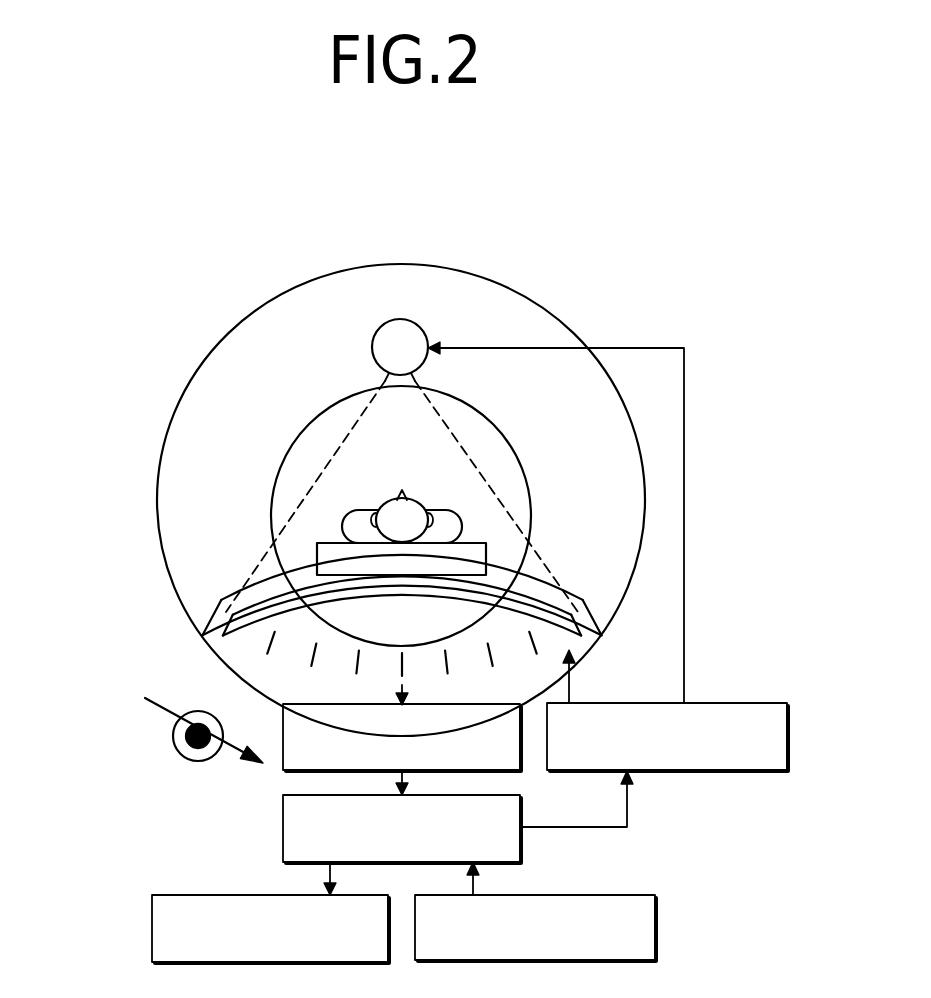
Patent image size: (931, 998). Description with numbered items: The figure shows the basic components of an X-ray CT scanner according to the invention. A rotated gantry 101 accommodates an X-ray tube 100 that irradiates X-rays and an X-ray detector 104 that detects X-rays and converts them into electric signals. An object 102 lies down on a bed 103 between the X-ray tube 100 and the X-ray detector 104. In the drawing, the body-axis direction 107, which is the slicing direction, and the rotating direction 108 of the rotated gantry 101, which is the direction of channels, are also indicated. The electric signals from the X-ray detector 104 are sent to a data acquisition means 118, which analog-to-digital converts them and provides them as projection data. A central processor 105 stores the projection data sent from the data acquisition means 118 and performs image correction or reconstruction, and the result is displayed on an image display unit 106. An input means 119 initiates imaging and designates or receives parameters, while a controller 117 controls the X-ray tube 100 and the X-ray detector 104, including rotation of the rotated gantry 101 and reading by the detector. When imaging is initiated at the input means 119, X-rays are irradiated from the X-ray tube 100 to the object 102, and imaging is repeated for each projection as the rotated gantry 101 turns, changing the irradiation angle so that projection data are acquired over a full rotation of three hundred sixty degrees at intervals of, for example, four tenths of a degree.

The X-ray tube 100 is at (422, 329).
The rotated gantry 101 is at (257, 337).
The object 102 is at (397, 503).
The bed 103 is at (327, 562).
The X-ray detector 104 is at (213, 638).
The central processor 105 is at (503, 843).
The image display unit 106 is at (160, 922).
The body-axis direction 107 is at (190, 753).
The rotating direction 108 is at (163, 710).
The controller 117 is at (748, 713).
The data acquisition means 118 is at (507, 762).
The input means 119 is at (645, 943).